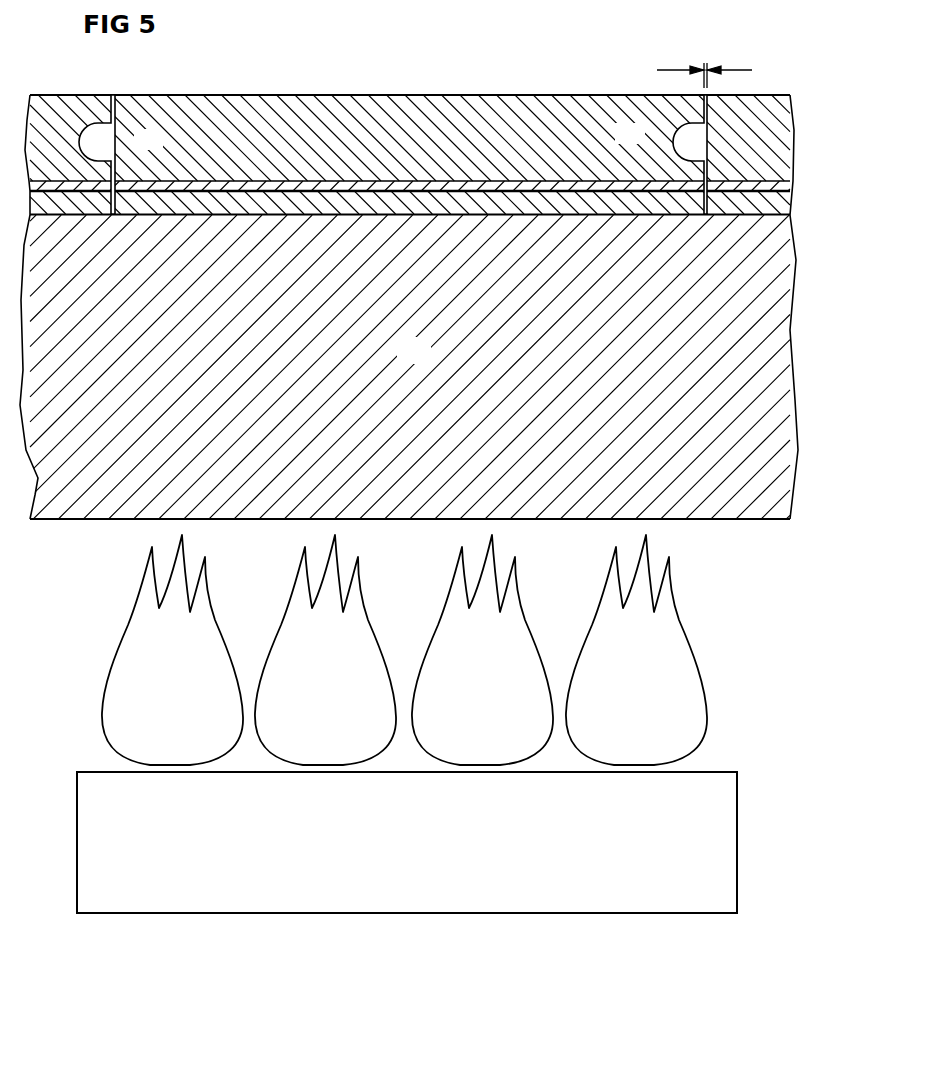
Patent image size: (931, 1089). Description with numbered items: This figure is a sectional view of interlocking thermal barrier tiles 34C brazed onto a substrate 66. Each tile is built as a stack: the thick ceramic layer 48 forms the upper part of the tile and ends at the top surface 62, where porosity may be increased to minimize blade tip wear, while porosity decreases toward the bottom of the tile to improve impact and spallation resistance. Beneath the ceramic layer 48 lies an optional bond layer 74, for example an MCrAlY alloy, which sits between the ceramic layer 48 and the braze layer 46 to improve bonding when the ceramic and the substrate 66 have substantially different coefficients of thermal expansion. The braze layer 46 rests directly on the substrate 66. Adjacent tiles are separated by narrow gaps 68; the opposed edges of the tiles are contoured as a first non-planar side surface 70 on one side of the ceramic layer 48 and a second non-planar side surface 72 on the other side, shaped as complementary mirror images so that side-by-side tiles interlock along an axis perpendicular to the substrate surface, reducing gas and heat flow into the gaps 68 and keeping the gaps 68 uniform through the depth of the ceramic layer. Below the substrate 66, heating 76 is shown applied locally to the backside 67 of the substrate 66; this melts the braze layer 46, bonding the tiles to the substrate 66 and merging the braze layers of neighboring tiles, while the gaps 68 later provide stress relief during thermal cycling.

The thermal barrier tiles 34C is at (477, 75).
The top surface 62 is at (284, 95).
The ceramic layer 48 is at (318, 113).
The bond layer 74 is at (397, 185).
The braze layer 46 is at (357, 204).
The substrate 66 is at (426, 361).
The backside 67 is at (270, 519).
The first non-planar side surface 70 is at (116, 130).
The second non-planar side surface 72 is at (672, 128).
The gaps 68 is at (680, 62).
The heating 76 is at (407, 842).